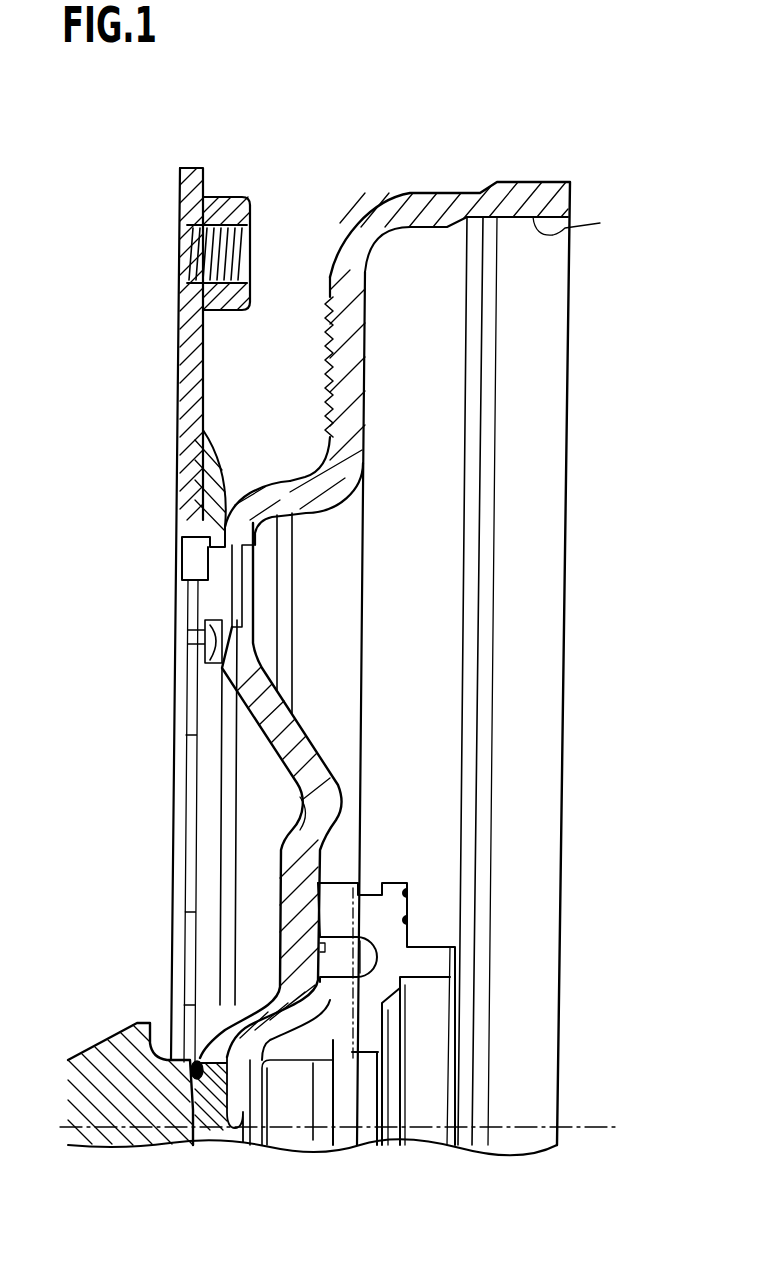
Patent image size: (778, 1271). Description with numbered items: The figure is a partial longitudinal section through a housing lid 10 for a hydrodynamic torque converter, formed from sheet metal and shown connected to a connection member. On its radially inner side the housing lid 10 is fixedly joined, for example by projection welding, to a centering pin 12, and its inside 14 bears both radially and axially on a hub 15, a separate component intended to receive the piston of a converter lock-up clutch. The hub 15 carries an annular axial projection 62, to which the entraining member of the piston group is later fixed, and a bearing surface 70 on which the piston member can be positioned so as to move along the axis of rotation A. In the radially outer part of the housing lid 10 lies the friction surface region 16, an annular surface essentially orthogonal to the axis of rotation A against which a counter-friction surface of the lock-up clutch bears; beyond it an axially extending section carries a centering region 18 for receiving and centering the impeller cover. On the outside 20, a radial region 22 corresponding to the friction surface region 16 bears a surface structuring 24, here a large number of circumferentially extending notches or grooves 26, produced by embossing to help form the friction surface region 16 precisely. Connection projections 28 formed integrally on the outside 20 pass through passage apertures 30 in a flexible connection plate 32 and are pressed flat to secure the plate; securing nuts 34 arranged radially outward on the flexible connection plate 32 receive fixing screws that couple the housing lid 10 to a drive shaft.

The housing lid 10 is at (418, 190).
The centering pin 12 is at (128, 1110).
The inside 14 is at (305, 702).
The hub 15 is at (325, 1100).
The friction surface region 16 is at (366, 359).
The centering region 18 is at (583, 223).
The outside 20 is at (316, 308).
The radial region 22 is at (313, 427).
The surface structuring 24 is at (330, 390).
The notches or grooves 26 is at (326, 333).
The connection projections 28 is at (200, 575).
The passage apertures 30 is at (205, 655).
The flexible connection plate 32 is at (180, 370).
The securing nuts 34 is at (236, 197).
The annular axial projection 62 is at (440, 947).
The bearing surface 70 is at (397, 880).
The axis of rotation A is at (597, 1128).